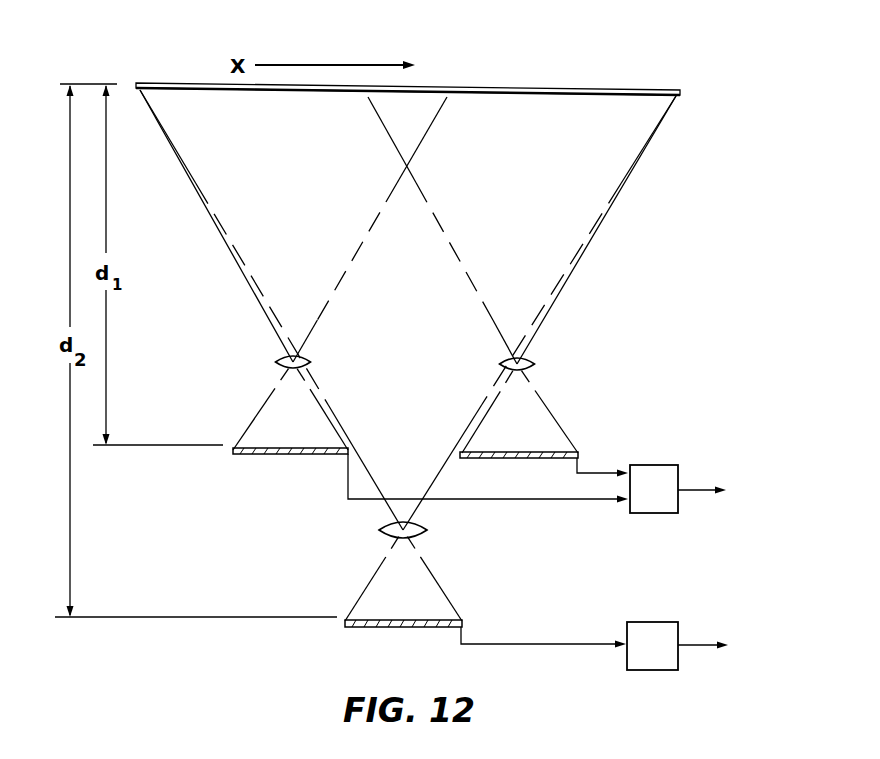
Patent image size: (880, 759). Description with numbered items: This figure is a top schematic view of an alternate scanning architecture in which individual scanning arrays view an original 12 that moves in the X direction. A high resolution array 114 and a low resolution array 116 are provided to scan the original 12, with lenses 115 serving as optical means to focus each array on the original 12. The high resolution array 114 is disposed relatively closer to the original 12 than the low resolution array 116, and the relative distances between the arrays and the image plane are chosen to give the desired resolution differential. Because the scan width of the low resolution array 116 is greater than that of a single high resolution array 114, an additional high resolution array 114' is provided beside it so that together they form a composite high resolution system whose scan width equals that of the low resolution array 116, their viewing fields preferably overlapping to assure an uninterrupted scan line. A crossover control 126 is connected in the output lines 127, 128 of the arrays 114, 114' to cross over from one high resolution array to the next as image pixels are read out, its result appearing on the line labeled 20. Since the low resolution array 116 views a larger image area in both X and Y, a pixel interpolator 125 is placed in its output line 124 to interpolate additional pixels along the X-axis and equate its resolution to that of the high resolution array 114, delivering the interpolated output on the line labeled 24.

The original 12 is at (572, 50).
The lens 115 is at (288, 364).
The high resolution array 114 is at (290, 479).
The additional high resolution array 114' is at (519, 477).
The low resolution array 116 is at (398, 630).
The output line of array 114' 128 is at (598, 470).
The output line of array 114 127 is at (562, 501).
The crossover control 126 is at (646, 515).
The multiplier output signal 20 is at (701, 488).
The output line of array 116 124 is at (549, 613).
The pixel interpolator 125 is at (639, 622).
The output signal 24 is at (691, 646).